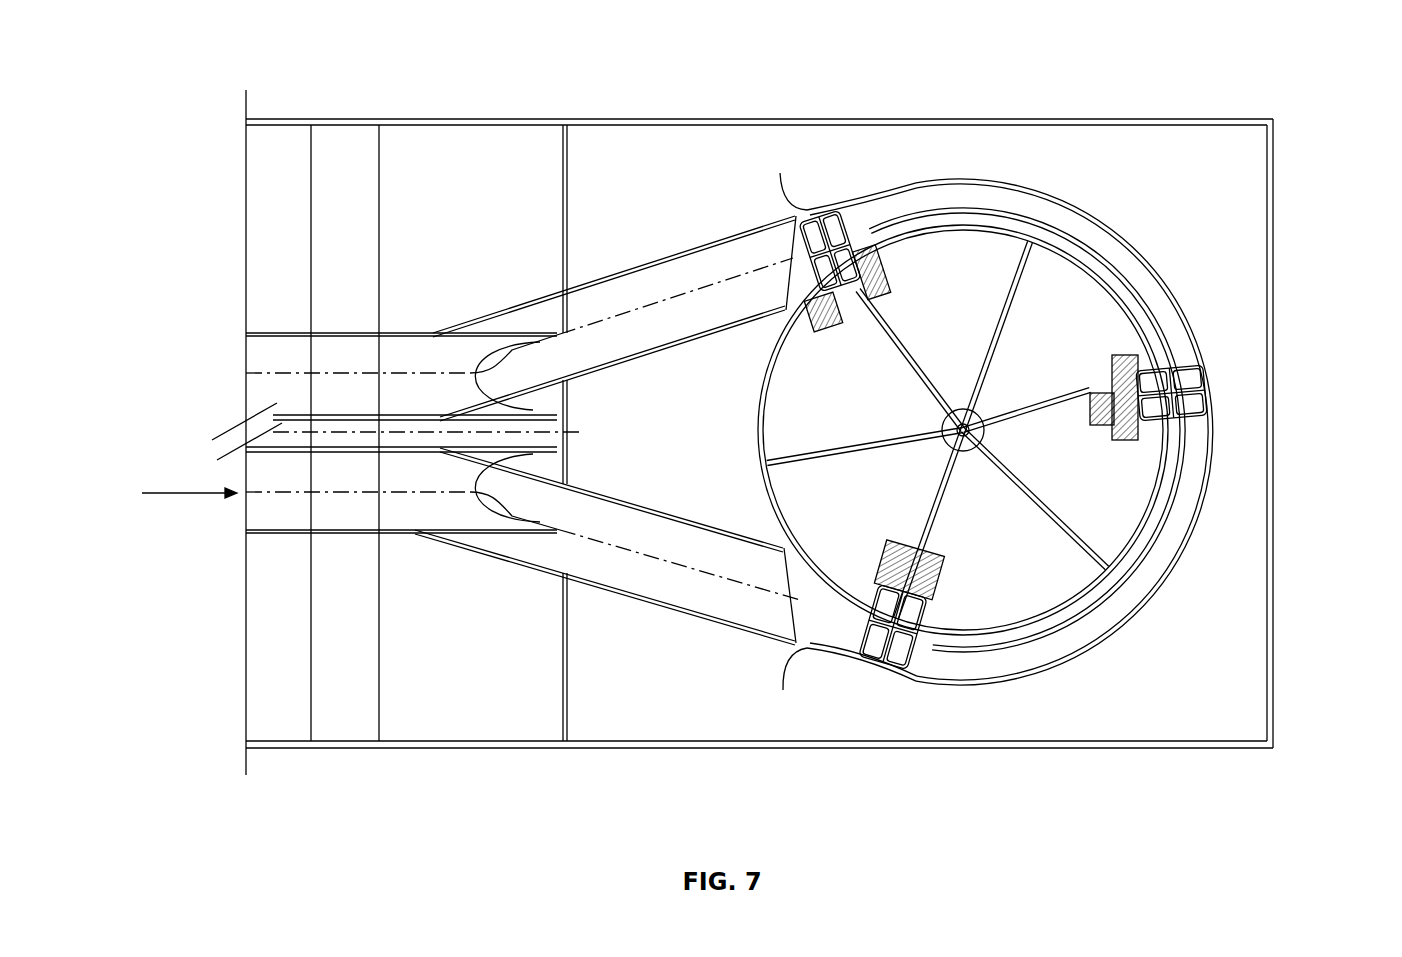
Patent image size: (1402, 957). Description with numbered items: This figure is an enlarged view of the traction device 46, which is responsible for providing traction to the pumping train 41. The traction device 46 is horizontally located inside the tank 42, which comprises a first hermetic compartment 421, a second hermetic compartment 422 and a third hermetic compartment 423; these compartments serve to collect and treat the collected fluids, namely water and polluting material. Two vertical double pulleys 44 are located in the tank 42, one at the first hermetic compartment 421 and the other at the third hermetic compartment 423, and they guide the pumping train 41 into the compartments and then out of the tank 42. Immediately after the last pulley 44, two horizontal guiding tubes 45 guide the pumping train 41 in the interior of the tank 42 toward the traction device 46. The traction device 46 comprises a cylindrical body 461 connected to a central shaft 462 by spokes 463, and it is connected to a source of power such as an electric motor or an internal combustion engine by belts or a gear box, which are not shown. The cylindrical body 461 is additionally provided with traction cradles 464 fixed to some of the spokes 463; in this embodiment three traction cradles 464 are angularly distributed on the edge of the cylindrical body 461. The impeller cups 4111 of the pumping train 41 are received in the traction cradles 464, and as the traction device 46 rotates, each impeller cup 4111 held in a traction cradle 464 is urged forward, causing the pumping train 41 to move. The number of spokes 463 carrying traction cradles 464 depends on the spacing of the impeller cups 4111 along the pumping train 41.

The pumping train 41 is at (175, 493).
The tank 42 is at (1273, 540).
The first hermetic compartment 421 is at (307, 471).
The second hermetic compartment 422 is at (1120, 713).
The third hermetic compartment 423 is at (540, 197).
The vertical double pulley 44 is at (400, 477).
The horizontal guiding tube 45 is at (643, 287).
The traction device 46 is at (1074, 371).
The cylindrical body 461 is at (1070, 432).
The central shaft 462 is at (1160, 306).
The spoke 463 is at (1074, 430).
The traction cradle 464 is at (1234, 346).
The impeller cup 4111 is at (1186, 381).